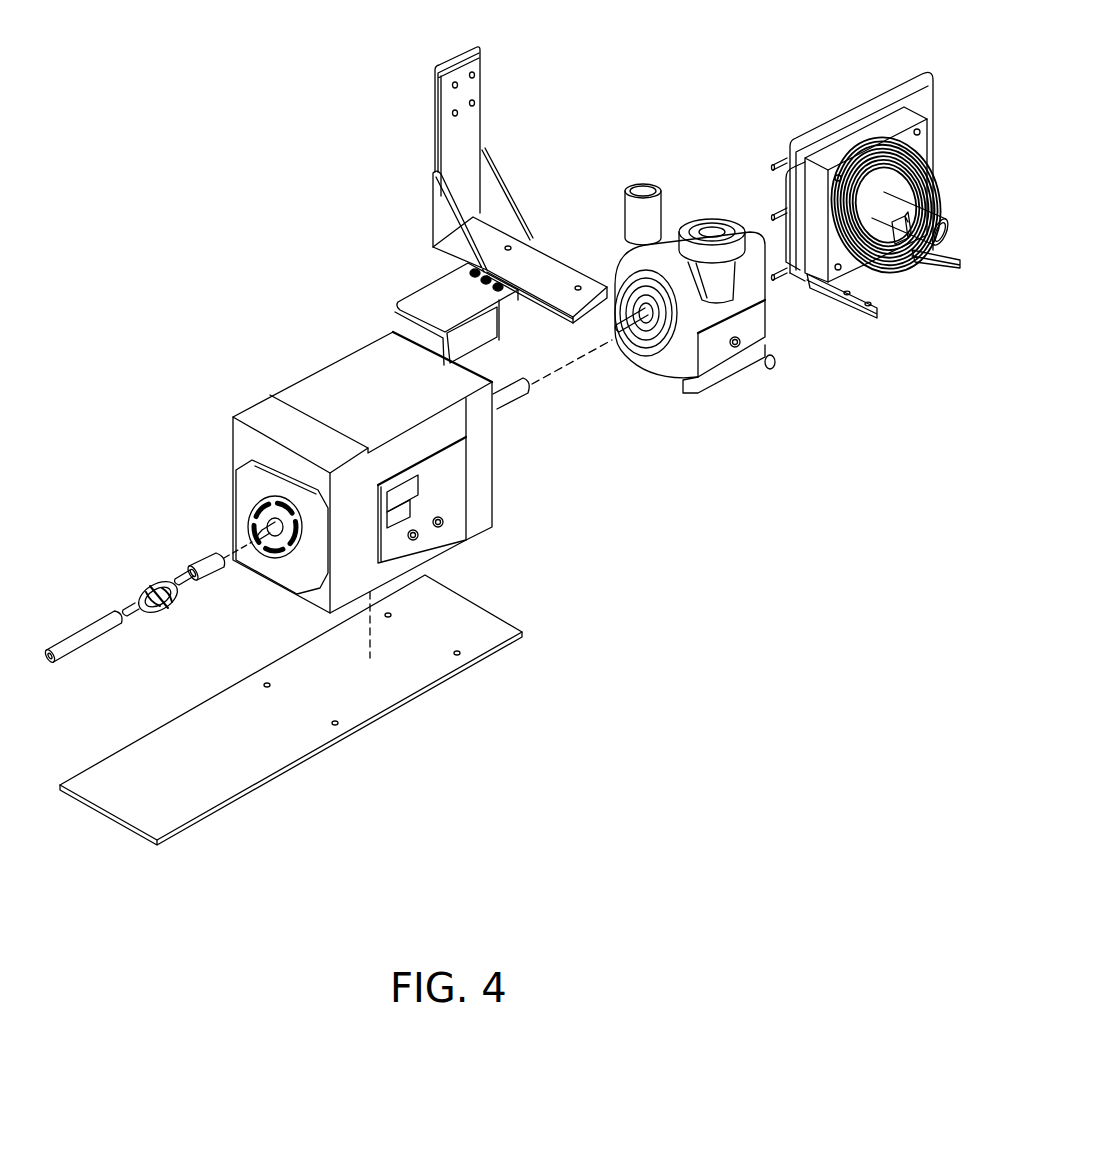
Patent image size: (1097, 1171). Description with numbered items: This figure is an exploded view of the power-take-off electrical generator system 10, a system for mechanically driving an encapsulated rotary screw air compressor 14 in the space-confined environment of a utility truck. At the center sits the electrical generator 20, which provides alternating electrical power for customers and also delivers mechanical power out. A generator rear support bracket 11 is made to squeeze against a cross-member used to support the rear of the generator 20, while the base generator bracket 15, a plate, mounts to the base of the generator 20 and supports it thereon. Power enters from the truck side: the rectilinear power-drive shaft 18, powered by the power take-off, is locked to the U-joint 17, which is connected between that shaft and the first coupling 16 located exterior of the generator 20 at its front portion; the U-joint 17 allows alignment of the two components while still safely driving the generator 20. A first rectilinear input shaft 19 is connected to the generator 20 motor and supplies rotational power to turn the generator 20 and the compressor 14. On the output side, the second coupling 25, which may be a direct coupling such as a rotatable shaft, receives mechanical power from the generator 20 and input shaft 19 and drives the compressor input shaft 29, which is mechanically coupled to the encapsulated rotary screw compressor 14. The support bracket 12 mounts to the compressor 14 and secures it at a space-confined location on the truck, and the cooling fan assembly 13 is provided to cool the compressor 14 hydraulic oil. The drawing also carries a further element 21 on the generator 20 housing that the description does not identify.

The power-take-off electrical generator system 10 is at (243, 170).
The generator rear support bracket 11 is at (432, 297).
The support bracket 12 is at (466, 169).
The cooling fan assembly 13 is at (896, 130).
The encapsulated rotary screw air compressor 14 is at (695, 321).
The base generator bracket 15 is at (478, 638).
The first coupling 16 is at (213, 575).
The U-joint 17 is at (165, 610).
The rectilinear power-drive shaft 18 is at (108, 612).
The first rectilinear input shaft 19 is at (253, 530).
The electrical generator 20 is at (357, 436).
The control panel 21 is at (452, 505).
The second coupling 25 is at (503, 408).
The compressor input shaft 29 is at (643, 347).